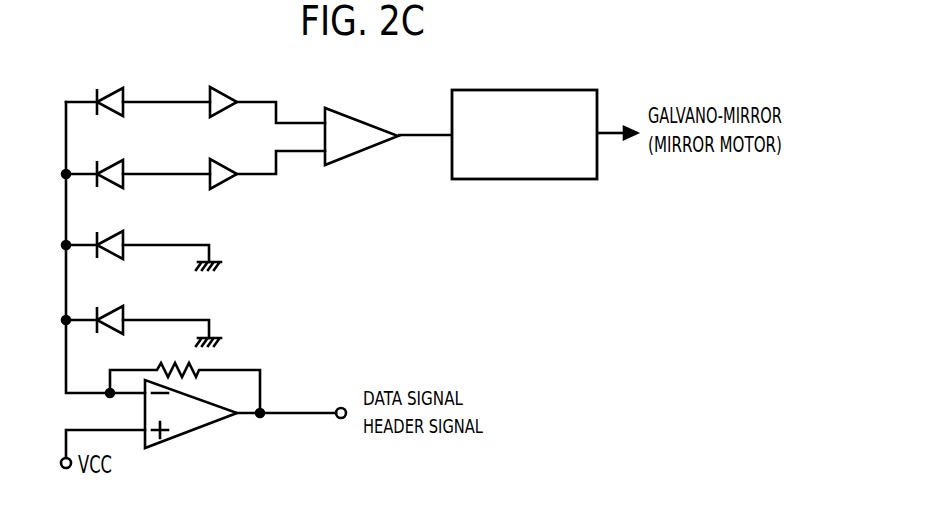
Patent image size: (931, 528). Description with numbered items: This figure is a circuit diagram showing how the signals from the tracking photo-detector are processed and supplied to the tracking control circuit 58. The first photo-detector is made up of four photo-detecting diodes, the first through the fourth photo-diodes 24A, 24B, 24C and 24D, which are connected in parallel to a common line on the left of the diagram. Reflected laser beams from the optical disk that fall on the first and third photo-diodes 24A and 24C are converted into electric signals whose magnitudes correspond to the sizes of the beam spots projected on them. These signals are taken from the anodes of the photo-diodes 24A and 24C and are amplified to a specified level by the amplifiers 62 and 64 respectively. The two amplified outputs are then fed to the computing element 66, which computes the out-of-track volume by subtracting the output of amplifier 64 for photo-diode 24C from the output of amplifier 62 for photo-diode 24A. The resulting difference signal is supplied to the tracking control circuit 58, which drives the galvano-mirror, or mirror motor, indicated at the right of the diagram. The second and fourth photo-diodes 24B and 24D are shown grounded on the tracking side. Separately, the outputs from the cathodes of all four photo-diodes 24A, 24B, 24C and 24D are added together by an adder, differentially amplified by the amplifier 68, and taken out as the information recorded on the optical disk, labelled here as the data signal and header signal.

The first photo-detecting diode 24A is at (120, 110).
The second photo-detecting diode 24B is at (120, 253).
The third photo-detecting diode 24C is at (120, 182).
The fourth photo-detecting diode 24D is at (120, 328).
The amplifier 62 is at (226, 92).
The amplifier 64 is at (228, 182).
The computing element 66 is at (348, 118).
The tracking control circuit 58 is at (547, 180).
The amplifier 68 is at (212, 424).